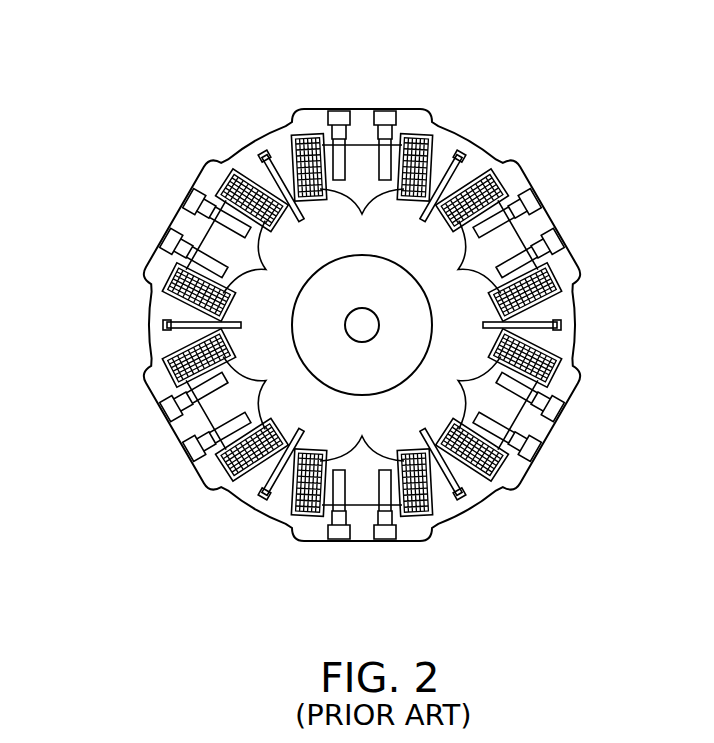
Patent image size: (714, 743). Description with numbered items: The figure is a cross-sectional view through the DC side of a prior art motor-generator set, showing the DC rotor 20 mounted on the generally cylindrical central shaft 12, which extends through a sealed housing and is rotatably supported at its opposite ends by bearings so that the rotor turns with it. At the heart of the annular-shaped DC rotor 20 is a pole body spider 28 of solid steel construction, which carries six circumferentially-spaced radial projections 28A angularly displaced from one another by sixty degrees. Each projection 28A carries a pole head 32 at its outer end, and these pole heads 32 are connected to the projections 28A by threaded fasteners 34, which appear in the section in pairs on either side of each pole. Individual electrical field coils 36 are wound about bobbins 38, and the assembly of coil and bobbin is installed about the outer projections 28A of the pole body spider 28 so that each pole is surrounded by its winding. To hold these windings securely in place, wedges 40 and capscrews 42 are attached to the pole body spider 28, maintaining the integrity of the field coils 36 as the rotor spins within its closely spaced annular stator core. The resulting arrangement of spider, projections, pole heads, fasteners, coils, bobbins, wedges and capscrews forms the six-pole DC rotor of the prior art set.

The central shaft 12 is at (362, 310).
The DC rotor 20 is at (398, 103).
The pole body spider 28 is at (546, 430).
The radial projections 28A is at (359, 323).
The pole heads 32 is at (369, 320).
The threaded fasteners 34 is at (361, 318).
The electrical field coils 36 is at (321, 332).
The bobbins 38 is at (362, 325).
The wedges 40 is at (358, 314).
The capscrews 42 is at (359, 322).